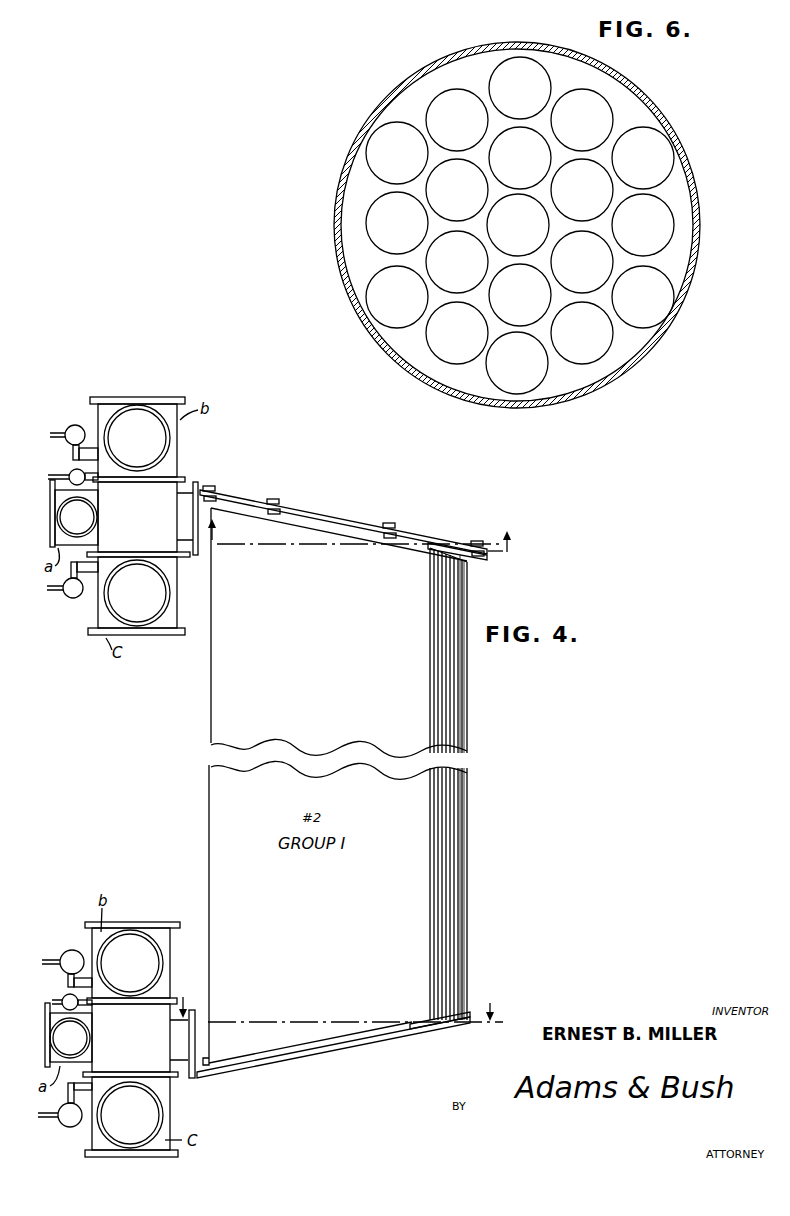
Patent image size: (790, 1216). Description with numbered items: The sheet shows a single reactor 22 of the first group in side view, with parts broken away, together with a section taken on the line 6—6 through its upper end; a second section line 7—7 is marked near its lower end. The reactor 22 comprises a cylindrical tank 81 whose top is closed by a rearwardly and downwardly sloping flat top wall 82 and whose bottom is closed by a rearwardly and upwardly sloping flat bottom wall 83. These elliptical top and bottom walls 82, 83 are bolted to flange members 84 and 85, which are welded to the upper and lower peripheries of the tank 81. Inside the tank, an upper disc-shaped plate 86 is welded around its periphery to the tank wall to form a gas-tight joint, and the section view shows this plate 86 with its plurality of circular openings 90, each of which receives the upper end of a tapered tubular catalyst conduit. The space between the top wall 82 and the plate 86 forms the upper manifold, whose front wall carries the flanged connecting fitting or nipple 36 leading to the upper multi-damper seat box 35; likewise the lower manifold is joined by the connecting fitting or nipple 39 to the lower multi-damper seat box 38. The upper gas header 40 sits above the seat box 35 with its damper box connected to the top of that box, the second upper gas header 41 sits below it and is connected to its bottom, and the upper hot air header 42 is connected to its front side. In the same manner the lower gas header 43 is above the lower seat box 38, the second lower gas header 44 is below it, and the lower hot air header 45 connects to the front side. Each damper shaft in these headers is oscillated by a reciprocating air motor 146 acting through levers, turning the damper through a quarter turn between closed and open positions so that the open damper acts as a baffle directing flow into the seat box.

In FIG. 6, the reactor 22 is at (700, 190).
In FIG. 4, the reactor 22 is at (476, 703).
In FIG. 6, the cylindrical tank 81 is at (691, 276).
In FIG. 4, the cylindrical tank 81 is at (466, 868).
In FIG. 6, the upper disc-shaped plate 86 is at (640, 118).
In FIG. 6, the circular openings 90 is at (575, 92).
In FIG. 4, the top wall 82 is at (398, 532).
In FIG. 4, the bottom wall 83 is at (331, 1050).
In FIG. 4, the upper flange member 84 is at (466, 570).
In FIG. 4, the lower flange member 85 is at (413, 1031).
In FIG. 4, the upper connecting fitting or nipple 36 is at (200, 495).
In FIG. 4, the lower connecting fitting or nipple 39 is at (196, 1018).
In FIG. 4, the upper multi-damper seat box 35 is at (140, 524).
In FIG. 4, the lower multi-damper seat box 38 is at (138, 1048).
In FIG. 4, the upper gas conduit or header 40 is at (180, 456).
In FIG. 4, the second upper gas conduit or header 41 is at (146, 638).
In FIG. 4, the upper hot air conduit or header 42 is at (98, 536).
In FIG. 4, the lower gas conduit or header 43 is at (150, 932).
In FIG. 4, the second lower gas conduit or header 44 is at (160, 1121).
In FIG. 4, the lower hot air conduit or header 45 is at (50, 1030).
In FIG. 4, the reciprocating air motor 146 is at (77, 425).
In FIG. 4, the section line 6— 6 is at (361, 536).
In FIG. 4, the section line 7— 7 is at (341, 1000).